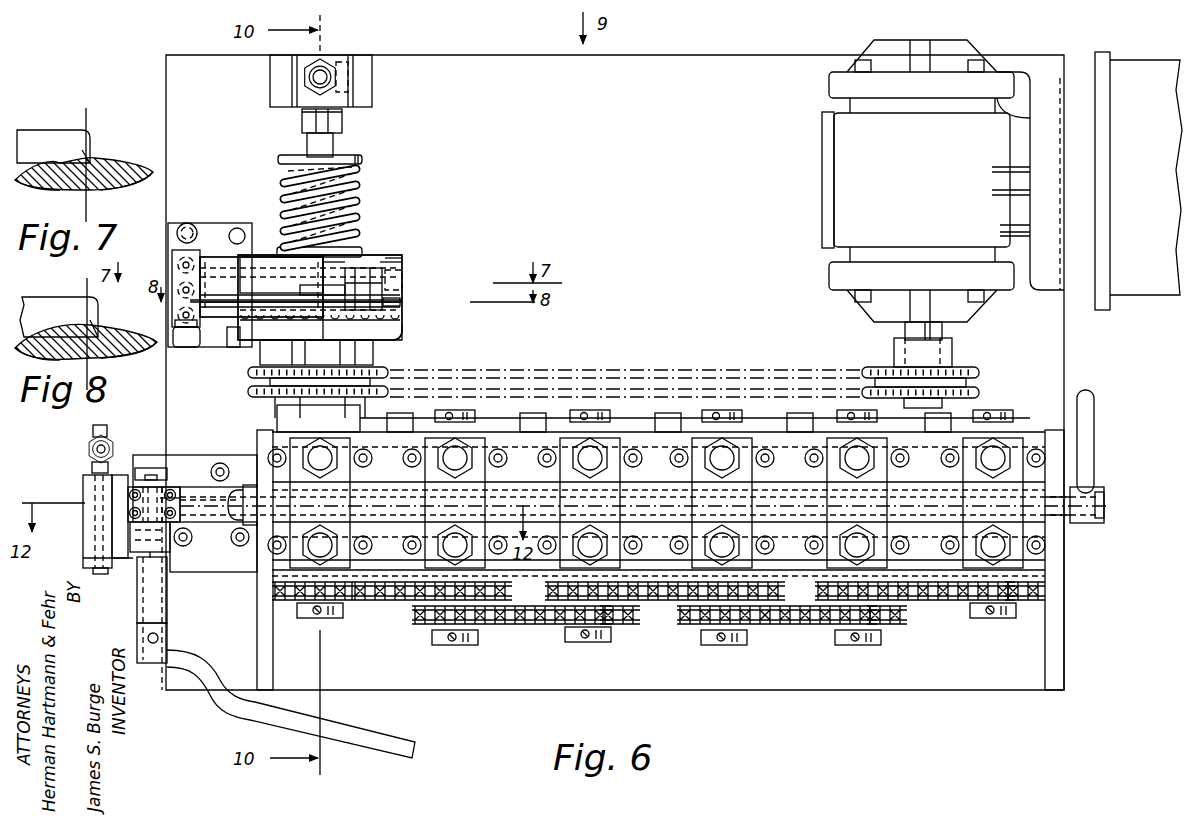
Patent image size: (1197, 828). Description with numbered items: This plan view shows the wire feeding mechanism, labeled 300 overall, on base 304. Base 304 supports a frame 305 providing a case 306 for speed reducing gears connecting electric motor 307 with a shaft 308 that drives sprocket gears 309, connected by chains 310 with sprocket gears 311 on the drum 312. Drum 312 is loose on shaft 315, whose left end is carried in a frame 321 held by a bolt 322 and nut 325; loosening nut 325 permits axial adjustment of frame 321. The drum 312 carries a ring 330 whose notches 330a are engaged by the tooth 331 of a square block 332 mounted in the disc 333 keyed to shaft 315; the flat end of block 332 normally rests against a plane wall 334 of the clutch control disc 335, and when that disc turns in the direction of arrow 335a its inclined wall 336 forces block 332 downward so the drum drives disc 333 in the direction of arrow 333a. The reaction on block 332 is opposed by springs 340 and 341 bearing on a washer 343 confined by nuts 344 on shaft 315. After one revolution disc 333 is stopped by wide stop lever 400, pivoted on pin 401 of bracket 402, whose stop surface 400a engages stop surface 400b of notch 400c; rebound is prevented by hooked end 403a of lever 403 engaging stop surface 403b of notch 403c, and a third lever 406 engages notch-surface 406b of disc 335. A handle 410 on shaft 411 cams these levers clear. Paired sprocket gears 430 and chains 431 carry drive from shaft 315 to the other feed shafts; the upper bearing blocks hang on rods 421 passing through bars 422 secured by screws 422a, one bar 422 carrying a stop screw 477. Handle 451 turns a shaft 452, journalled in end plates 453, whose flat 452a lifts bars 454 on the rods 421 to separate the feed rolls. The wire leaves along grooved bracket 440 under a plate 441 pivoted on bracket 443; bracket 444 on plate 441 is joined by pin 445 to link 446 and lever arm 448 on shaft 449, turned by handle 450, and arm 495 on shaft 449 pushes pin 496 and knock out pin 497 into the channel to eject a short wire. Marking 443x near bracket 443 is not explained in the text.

In FIG. 6, the machine assembly 300 is at (490, 44).
In FIG. 6, the base 304 is at (166, 100).
In FIG. 6, the frame 305 is at (830, 90).
In FIG. 6, the case 306 is at (840, 160).
In FIG. 6, the electric motor 307 is at (1155, 50).
In FIG. 6, the shaft 308 is at (902, 330).
In FIG. 6, the sprocket gears 309 is at (982, 392).
In FIG. 6, the chains 310 is at (650, 378).
In FIG. 6, the sprocket gears 311 is at (248, 392).
In FIG. 6, the drum 312 is at (374, 360).
In FIG. 6, the shaft 315 is at (343, 115).
In FIG. 6, the frame 321 is at (268, 106).
In FIG. 6, the bolt 322 is at (302, 85).
In FIG. 6, the nut 325 is at (340, 76).
In FIG. 6, the ring 330 is at (398, 338).
In FIG. 6, the notches 330a is at (405, 332).
In FIG. 6, the tooth 331 is at (402, 304).
In FIG. 6, the square block 332 is at (410, 278).
In FIG. 6, the disc 333 is at (405, 281).
In FIG. 7, the disc 333 is at (125, 170).
In FIG. 8, the disc 333 is at (128, 338).
In FIG. 6, the arrow 333a is at (390, 292).
In FIG. 6, the plane wall 334 is at (372, 280).
In FIG. 6, the clutch control disc 335 is at (400, 262).
In FIG. 6, the arrow 335a is at (432, 258).
In FIG. 6, the inclined wall 336 is at (352, 272).
In FIG. 6, the spring 340 is at (365, 175).
In FIG. 6, the spring 341 is at (365, 192).
In FIG. 6, the washer 343 is at (363, 159).
In FIG. 6, the nuts 344 is at (335, 140).
In FIG. 6, the stop lever 400 is at (200, 280).
In FIG. 7, the stop lever 400 is at (45, 137).
In FIG. 7, the stop surface 400a is at (92, 152).
In FIG. 6, the stop surface 400b is at (340, 262).
In FIG. 7, the stop surface 400b is at (115, 188).
In FIG. 6, the notch 400c is at (261, 287).
In FIG. 7, the notch 400c is at (50, 186).
In FIG. 6, the pin 401 is at (210, 257).
In FIG. 6, the bracket 402 is at (185, 225).
In FIG. 6, the lever 403 is at (222, 300).
In FIG. 8, the lever 403 is at (55, 302).
In FIG. 8, the hooked end 403a is at (95, 325).
In FIG. 6, the stop surface 403b is at (320, 317).
In FIG. 8, the stop surface 403b is at (45, 360).
In FIG. 6, the notch 403c is at (400, 318).
In FIG. 8, the notch 403c is at (118, 332).
In FIG. 6, the lever 406 is at (263, 263).
In FIG. 6, the notch-surface 406b is at (322, 285).
In FIG. 6, the handle 410 is at (178, 242).
In FIG. 6, the shaft 411 is at (200, 328).
In FIG. 6, the rod 421 is at (855, 455).
In FIG. 6, the bar 422 is at (1022, 445).
In FIG. 6, the screws 422a is at (905, 548).
In FIG. 6, the sprocket gears 430 is at (272, 595).
In FIG. 6, the chains 431 is at (380, 603).
In FIG. 6, the supporting bracket 440 is at (220, 552).
In FIG. 6, the plate 441 is at (88, 492).
In FIG. 6, the bracket 443 is at (167, 600).
In FIG. 6, the lever pivot 443x is at (85, 532).
In FIG. 6, the bracket 444 is at (180, 487).
In FIG. 6, the pin 445 is at (152, 468).
In FIG. 6, the link 446 is at (160, 490).
In FIG. 6, the lever arm 448 is at (112, 462).
In FIG. 6, the shaft 449 is at (166, 601).
In FIG. 6, the handle 450 is at (222, 706).
In FIG. 6, the handle 451 is at (1094, 410).
In FIG. 6, the shaft 452 is at (1100, 490).
In FIG. 6, the flat 452a is at (1040, 520).
In FIG. 6, the frame end plates 453 is at (262, 438).
In FIG. 6, the bars 454 is at (612, 460).
In FIG. 6, the stop screw 477 is at (533, 440).
In FIG. 6, the arm 495 is at (160, 552).
In FIG. 6, the pin 496 is at (225, 535).
In FIG. 6, the knock out pin 497 is at (216, 508).